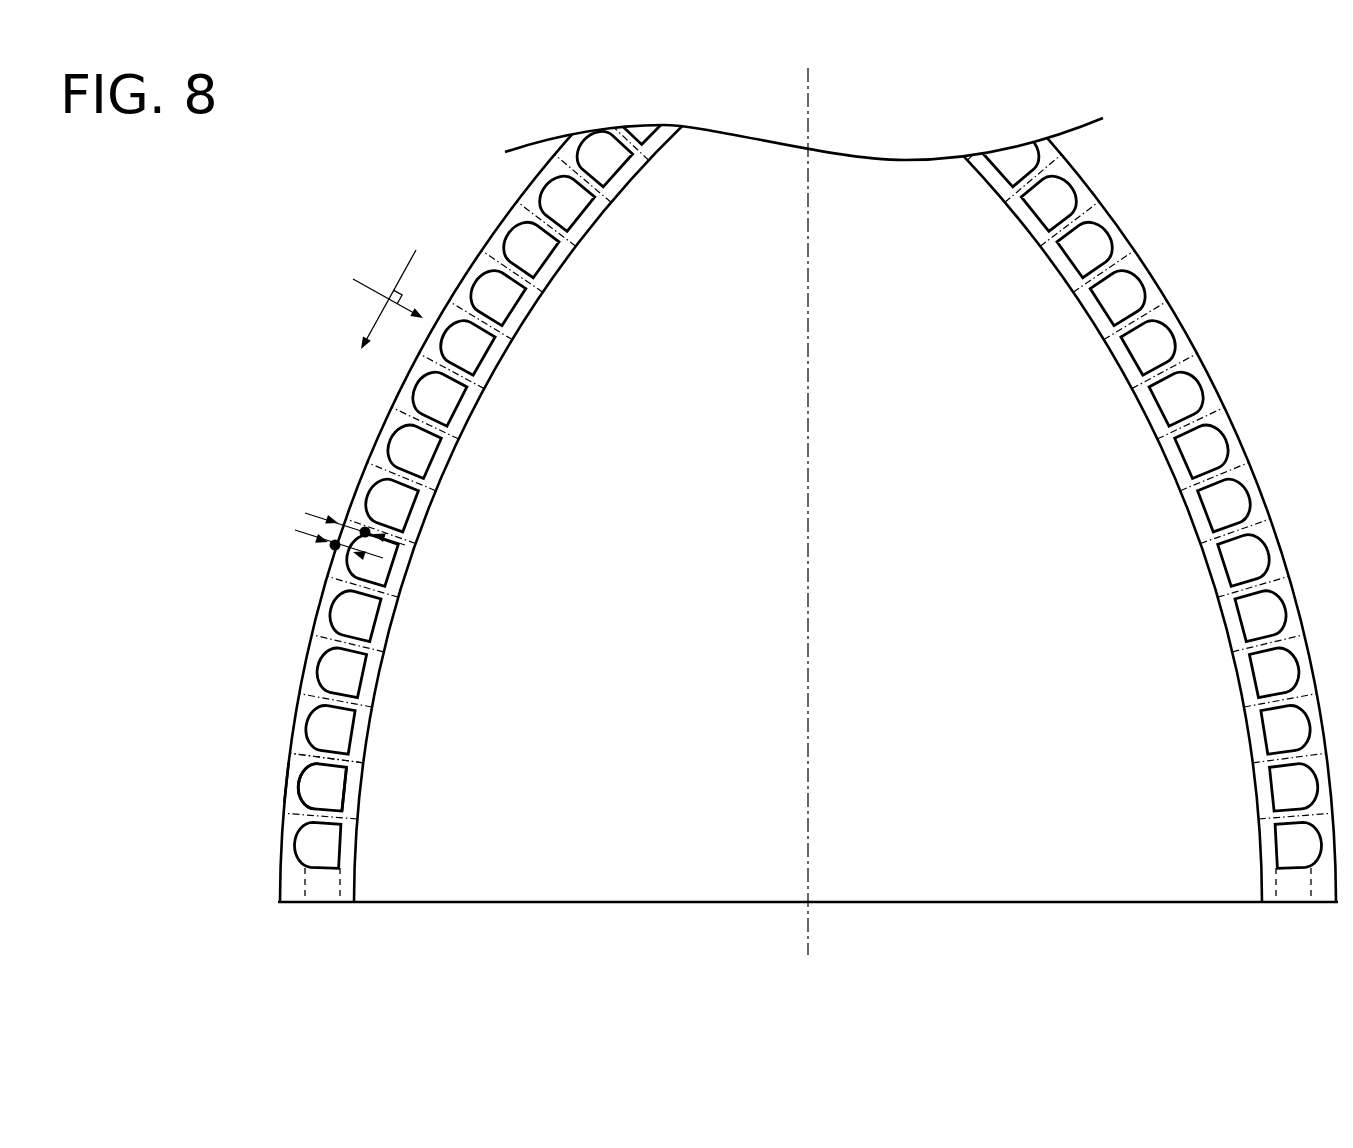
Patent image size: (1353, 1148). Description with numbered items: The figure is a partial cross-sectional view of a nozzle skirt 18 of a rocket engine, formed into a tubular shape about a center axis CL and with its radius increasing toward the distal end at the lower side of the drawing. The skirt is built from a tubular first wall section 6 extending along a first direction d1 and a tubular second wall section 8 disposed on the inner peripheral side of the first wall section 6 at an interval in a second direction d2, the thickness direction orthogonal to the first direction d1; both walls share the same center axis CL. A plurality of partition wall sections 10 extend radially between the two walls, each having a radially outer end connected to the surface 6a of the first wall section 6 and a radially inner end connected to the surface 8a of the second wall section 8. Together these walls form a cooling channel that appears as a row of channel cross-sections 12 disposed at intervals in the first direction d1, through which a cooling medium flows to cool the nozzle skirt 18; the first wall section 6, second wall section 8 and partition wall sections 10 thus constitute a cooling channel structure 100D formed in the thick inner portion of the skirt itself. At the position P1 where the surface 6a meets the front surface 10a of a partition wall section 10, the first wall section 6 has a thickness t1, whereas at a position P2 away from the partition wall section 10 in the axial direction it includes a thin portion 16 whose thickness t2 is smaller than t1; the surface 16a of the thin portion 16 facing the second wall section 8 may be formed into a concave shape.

The first wall section 6 is at (454, 459).
The surface of the first wall section on the side of the second wall section 6a is at (312, 763).
The second wall section 8 is at (358, 756).
The surface of the second wall section on the side of the first wall section 8a is at (340, 784).
The partition wall section 10 is at (367, 658).
The front surface of the partition wall section 10a is at (348, 775).
The channel cross-section 12 is at (345, 675).
The thin portion 16 is at (303, 660).
The surface of the thin portion 16a is at (285, 793).
The nozzle skirt 18 is at (1227, 141).
The cooling channel structure 100D is at (1234, 229).
The center axis CL is at (810, 498).
The position where surface 6a and front surface 10a are connected P1 is at (365, 527).
The position away from the partition wall section P2 is at (332, 546).
The thickness of the first wall section at position P1 t1 is at (352, 522).
The thickness of the thin portion t2 is at (335, 553).
The first direction d1 is at (361, 306).
The second direction d2 is at (388, 267).